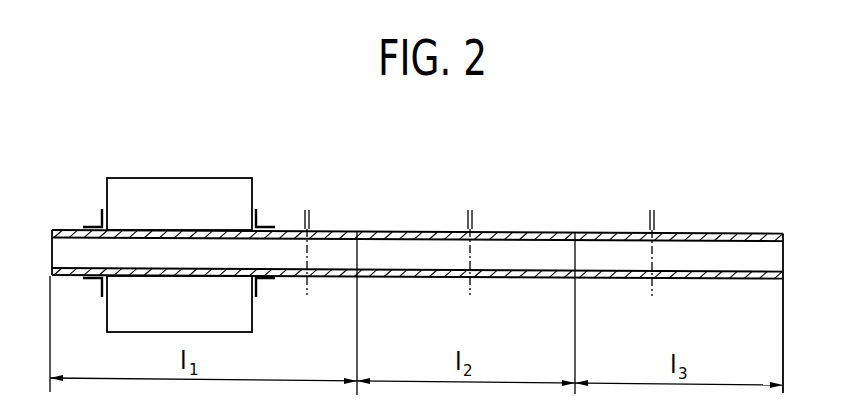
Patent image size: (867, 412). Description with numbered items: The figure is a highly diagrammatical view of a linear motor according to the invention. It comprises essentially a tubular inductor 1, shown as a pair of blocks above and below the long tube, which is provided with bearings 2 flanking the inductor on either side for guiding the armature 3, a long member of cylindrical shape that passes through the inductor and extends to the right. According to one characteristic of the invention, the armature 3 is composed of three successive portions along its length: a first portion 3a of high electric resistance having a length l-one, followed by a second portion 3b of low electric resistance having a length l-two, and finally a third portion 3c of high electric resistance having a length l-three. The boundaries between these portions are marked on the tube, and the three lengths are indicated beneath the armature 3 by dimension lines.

The tubular inductor 1 is at (165, 186).
The bearings 2 is at (92, 224).
The armature 3 is at (589, 222).
The first portion 3a is at (326, 276).
The second portion 3b is at (492, 277).
The third portion 3c is at (673, 278).